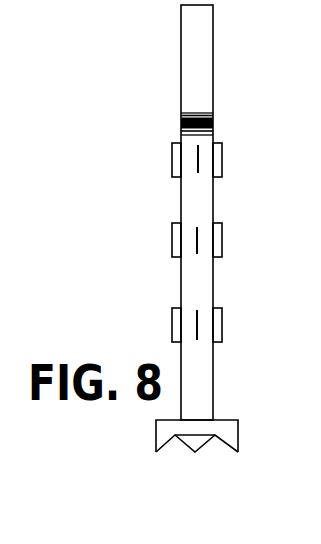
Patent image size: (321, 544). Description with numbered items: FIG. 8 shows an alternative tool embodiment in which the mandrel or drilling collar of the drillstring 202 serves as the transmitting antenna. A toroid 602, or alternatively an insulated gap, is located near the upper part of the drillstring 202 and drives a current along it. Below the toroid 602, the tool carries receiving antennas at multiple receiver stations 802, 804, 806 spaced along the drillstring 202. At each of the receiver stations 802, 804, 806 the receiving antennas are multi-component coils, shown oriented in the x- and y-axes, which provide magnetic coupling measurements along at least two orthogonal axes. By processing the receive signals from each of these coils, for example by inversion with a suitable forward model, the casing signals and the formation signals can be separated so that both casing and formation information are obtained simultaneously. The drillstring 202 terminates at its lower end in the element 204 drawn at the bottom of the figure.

The wellbore tubular / pipe body 202 is at (185, 52).
The marker band 602 is at (208, 116).
The first sensor assembly 802 is at (178, 173).
The second sensor assembly 804 is at (178, 253).
The third sensor assembly 806 is at (178, 338).
The drill bit / bottom assembly 204 is at (220, 422).